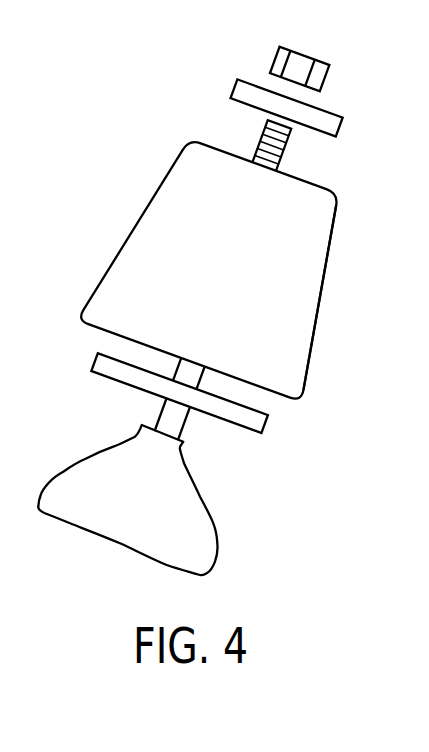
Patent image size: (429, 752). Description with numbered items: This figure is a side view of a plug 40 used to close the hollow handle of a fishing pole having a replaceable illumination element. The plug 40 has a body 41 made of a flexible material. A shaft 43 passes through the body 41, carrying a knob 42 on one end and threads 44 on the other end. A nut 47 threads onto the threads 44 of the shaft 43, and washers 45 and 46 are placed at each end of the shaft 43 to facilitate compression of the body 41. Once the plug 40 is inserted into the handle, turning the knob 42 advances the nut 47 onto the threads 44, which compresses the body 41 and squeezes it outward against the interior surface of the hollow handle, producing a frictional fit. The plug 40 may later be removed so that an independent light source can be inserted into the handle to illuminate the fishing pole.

The plug 40 is at (320, 284).
The body 41 is at (268, 343).
The knob 42 is at (205, 500).
The shaft 43 is at (157, 413).
The threads 44 is at (288, 130).
The washer 45 is at (97, 360).
The washer 46 is at (237, 88).
The nut 47 is at (328, 67).